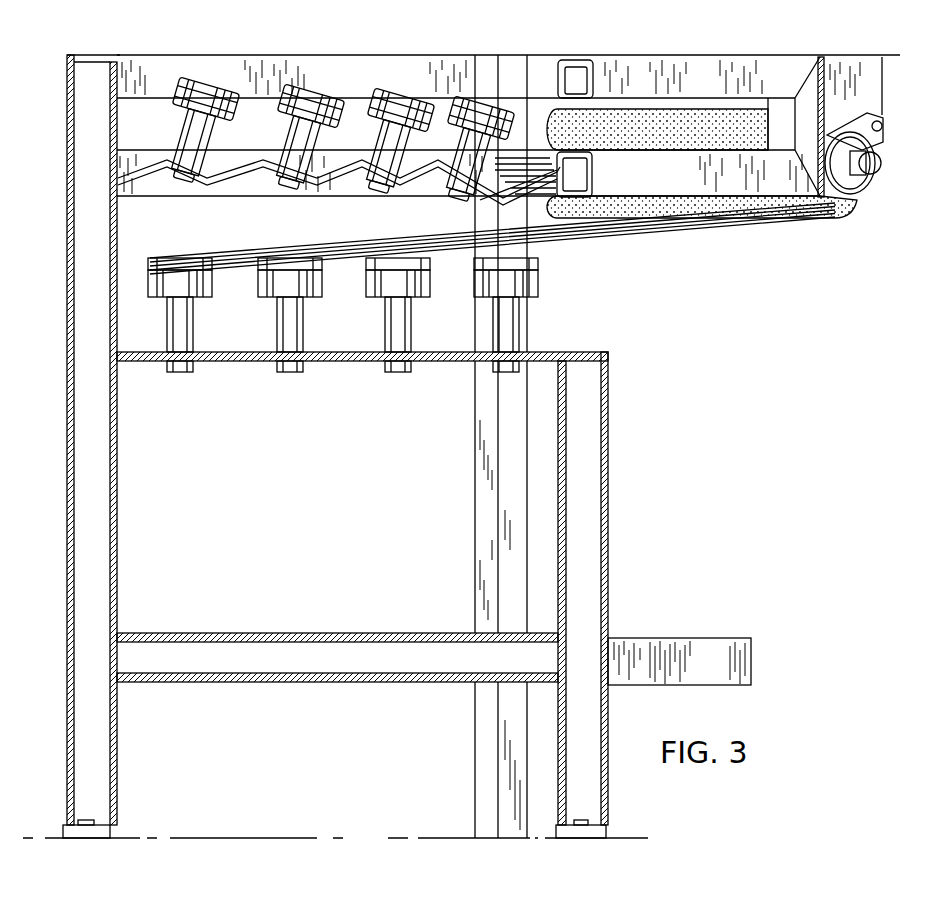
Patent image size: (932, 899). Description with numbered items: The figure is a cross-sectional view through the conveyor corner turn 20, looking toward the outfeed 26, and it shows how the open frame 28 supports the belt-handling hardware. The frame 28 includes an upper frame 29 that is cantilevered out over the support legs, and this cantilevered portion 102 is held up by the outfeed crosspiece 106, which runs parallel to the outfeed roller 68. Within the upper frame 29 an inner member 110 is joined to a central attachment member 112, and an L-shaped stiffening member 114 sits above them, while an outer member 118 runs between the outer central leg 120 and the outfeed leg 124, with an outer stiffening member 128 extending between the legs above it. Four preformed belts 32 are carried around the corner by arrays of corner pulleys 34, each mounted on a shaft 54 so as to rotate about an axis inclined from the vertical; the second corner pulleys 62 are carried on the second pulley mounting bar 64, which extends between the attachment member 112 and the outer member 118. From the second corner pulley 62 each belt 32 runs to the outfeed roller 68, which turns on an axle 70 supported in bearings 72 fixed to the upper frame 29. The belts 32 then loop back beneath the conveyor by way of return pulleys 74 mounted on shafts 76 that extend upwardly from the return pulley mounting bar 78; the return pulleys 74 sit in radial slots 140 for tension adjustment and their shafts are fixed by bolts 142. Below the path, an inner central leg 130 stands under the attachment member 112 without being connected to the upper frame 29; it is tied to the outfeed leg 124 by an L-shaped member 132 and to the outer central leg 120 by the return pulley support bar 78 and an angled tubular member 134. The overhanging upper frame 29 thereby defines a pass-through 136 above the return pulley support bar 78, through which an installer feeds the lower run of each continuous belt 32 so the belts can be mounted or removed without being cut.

The conveyor corner turn 20 is at (492, 18).
The outfeed 26 is at (867, 82).
The open frame 28 is at (68, 622).
The upper frame 29 is at (755, 58).
The preformed belts 32 is at (432, 92).
The corner pulleys 34 is at (232, 110).
The shaft 54 is at (187, 133).
The second corner pulley 62 is at (372, 113).
The second pulley mounting bar 64 is at (352, 192).
The outfeed roller 68 is at (778, 215).
The axle 70 is at (878, 176).
The bearings 72 is at (873, 150).
The return pulleys 74 is at (198, 290).
The shafts 76 is at (403, 335).
The return pulley mounting bar 78 is at (448, 367).
The cantilevered portion 102 is at (655, 57).
The outfeed crosspiece 106 is at (540, 195).
The inner member 110 is at (722, 190).
The central attachment member 112 is at (603, 170).
The L-shaped stiffening member 114 is at (612, 57).
The outer member 118 is at (148, 200).
The outer central leg 120 is at (68, 228).
The outfeed leg 124 is at (473, 528).
The outer stiffening member 128 is at (128, 55).
The inner central leg 130 is at (608, 513).
The L-shaped members 132 is at (683, 638).
The angled tubular member 134 is at (293, 632).
The pass-through 136 is at (587, 352).
The radial slots 140 is at (305, 368).
The bolts 142 is at (177, 370).